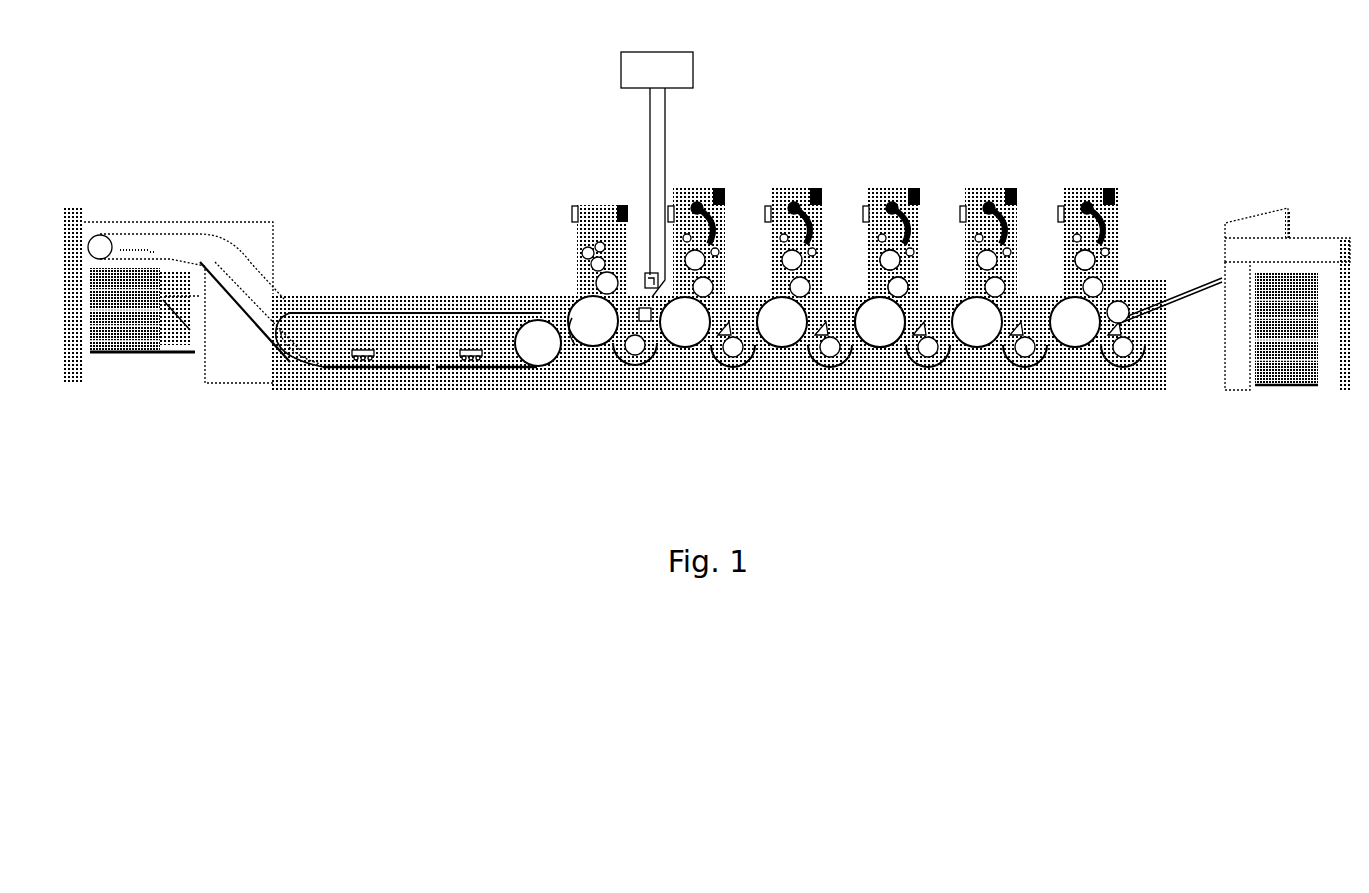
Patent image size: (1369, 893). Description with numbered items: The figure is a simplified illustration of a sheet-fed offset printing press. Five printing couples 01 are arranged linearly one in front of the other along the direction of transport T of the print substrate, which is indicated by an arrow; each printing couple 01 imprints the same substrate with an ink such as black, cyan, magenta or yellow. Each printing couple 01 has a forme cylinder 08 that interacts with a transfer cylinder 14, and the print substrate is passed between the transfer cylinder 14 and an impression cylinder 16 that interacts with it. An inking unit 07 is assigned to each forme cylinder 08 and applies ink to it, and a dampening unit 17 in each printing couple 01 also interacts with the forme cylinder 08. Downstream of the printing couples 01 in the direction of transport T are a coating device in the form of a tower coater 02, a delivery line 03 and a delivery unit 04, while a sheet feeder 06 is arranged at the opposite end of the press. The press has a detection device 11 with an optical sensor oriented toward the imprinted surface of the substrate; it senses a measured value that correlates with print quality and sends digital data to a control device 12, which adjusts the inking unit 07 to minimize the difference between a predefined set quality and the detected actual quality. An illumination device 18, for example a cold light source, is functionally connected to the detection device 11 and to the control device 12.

The printing couple 01 is at (698, 164).
The tower coater 02 is at (580, 213).
The delivery line 03 is at (404, 262).
The delivery unit 04 is at (108, 202).
The sheet feeder 06 is at (1302, 207).
The inking unit 07 is at (727, 221).
The forme cylinder 08 is at (880, 261).
The detection device 11 is at (645, 280).
The control device 12 is at (645, 81).
The transfer cylinder 14 is at (908, 286).
The impression cylinder 16 is at (877, 342).
The dampening unit 17 is at (1105, 262).
The illumination device 18 is at (640, 322).
The direction of transport T is at (1176, 282).